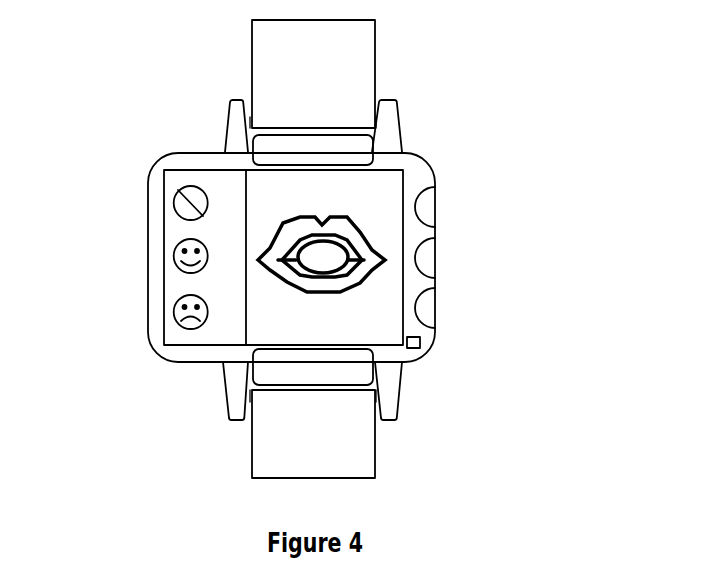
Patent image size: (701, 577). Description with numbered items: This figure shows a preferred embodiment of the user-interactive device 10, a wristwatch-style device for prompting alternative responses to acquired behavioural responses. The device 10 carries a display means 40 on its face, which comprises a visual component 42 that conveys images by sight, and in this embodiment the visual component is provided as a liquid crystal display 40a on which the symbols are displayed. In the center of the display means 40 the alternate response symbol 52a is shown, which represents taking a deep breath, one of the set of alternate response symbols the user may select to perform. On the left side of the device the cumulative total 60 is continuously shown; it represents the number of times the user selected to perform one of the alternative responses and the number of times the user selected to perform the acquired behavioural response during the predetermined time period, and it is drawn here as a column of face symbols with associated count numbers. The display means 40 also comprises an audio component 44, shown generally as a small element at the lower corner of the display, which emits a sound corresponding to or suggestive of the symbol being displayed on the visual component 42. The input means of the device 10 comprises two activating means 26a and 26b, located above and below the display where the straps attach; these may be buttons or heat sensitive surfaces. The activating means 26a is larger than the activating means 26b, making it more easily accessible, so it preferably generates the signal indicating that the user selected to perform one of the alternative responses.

The user-interactive device 10 is at (523, 125).
The activating means 26a is at (322, 373).
The activating means 26b is at (343, 152).
The display means 40 is at (383, 183).
The liquid crystal display 40a is at (385, 212).
The visual component 42 is at (265, 190).
The audio component 44 is at (423, 342).
The alternate response symbol 52a is at (345, 293).
The cumulative total 60 is at (175, 320).